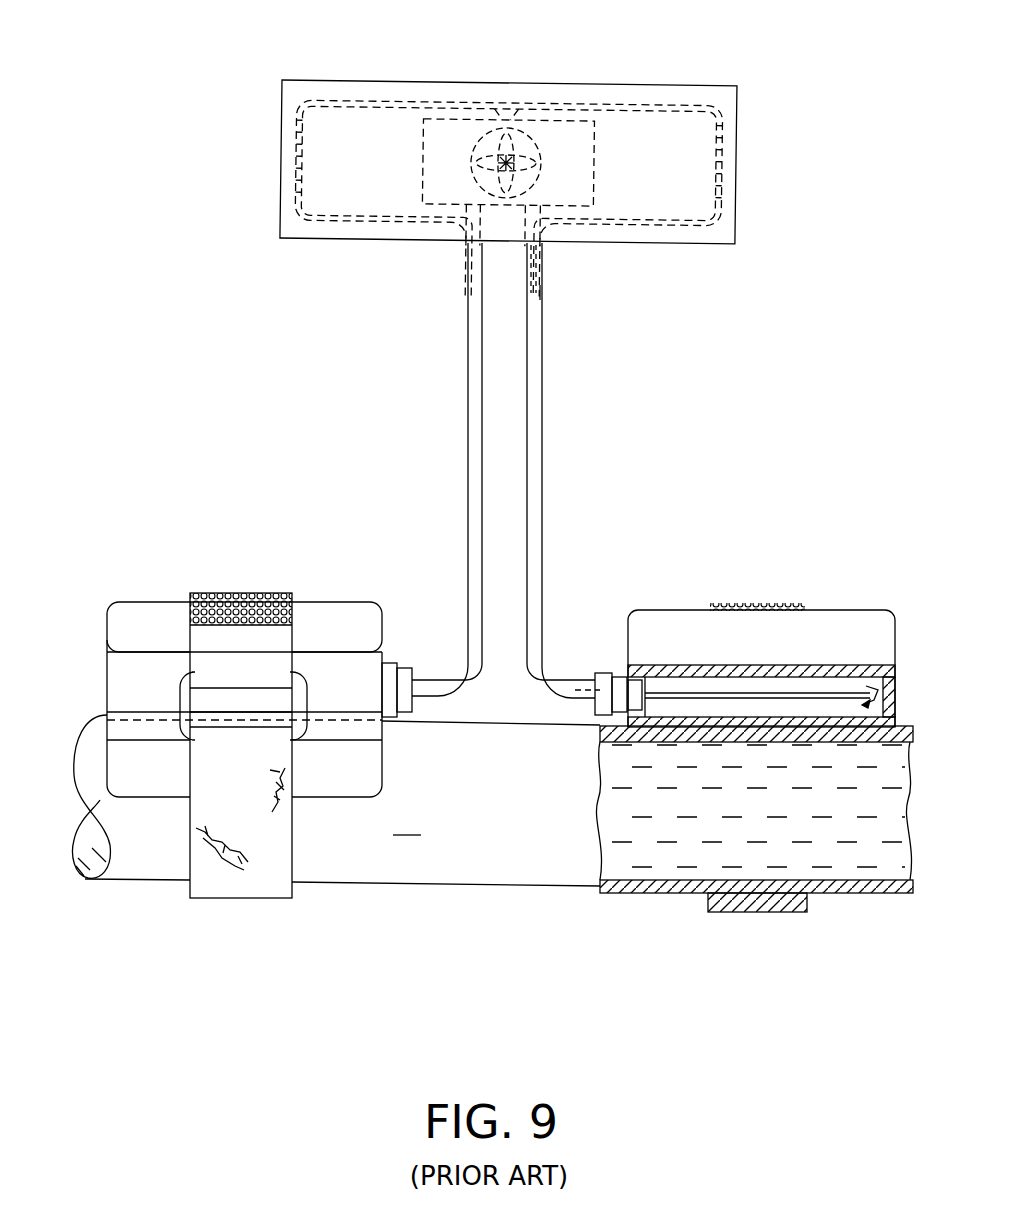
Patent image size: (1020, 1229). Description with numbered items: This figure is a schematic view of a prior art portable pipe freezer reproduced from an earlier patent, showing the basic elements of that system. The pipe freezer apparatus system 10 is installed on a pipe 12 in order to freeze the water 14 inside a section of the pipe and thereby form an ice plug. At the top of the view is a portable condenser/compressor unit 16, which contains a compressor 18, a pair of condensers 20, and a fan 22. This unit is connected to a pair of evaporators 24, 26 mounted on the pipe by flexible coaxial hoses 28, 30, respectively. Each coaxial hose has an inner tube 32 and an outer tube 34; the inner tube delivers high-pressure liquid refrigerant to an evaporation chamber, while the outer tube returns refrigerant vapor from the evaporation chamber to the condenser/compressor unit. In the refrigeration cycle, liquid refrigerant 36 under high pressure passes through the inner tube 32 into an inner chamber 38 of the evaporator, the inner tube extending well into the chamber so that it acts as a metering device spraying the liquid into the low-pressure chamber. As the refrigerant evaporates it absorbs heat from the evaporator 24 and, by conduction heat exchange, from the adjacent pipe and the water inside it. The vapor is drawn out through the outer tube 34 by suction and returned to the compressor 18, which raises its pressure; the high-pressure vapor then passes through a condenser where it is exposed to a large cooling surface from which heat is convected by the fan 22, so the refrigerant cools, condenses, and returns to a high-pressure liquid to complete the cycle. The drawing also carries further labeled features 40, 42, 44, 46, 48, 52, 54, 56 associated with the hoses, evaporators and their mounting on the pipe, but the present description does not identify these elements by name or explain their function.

The pipe freezer apparatus system 10 is at (762, 209).
The pipe 12 is at (336, 800).
The water 14 is at (825, 862).
The portable condenser/compressor unit 16 is at (635, 95).
The compressor 18 is at (437, 130).
The condensers 20 is at (297, 116).
The fan 22 is at (530, 155).
The evaporator 24 is at (880, 632).
The evaporator 26 is at (118, 622).
The flexible coaxial hose 28 is at (540, 443).
The flexible coaxial hose 30 is at (470, 437).
The inner tube 32 is at (538, 295).
The outer tube 34 is at (547, 258).
The liquid refrigerant 36 is at (808, 688).
The inner chamber 38 is at (850, 690).
The inner conduit 40 is at (543, 283).
The sensor bracket 42 is at (660, 625).
The bracket body 44 is at (158, 612).
The flow direction arrow 46 is at (895, 700).
The fitting nut 48 is at (620, 678).
The strap 52 is at (213, 900).
The strap texture 54 is at (258, 600).
The slot 56 is at (183, 727).